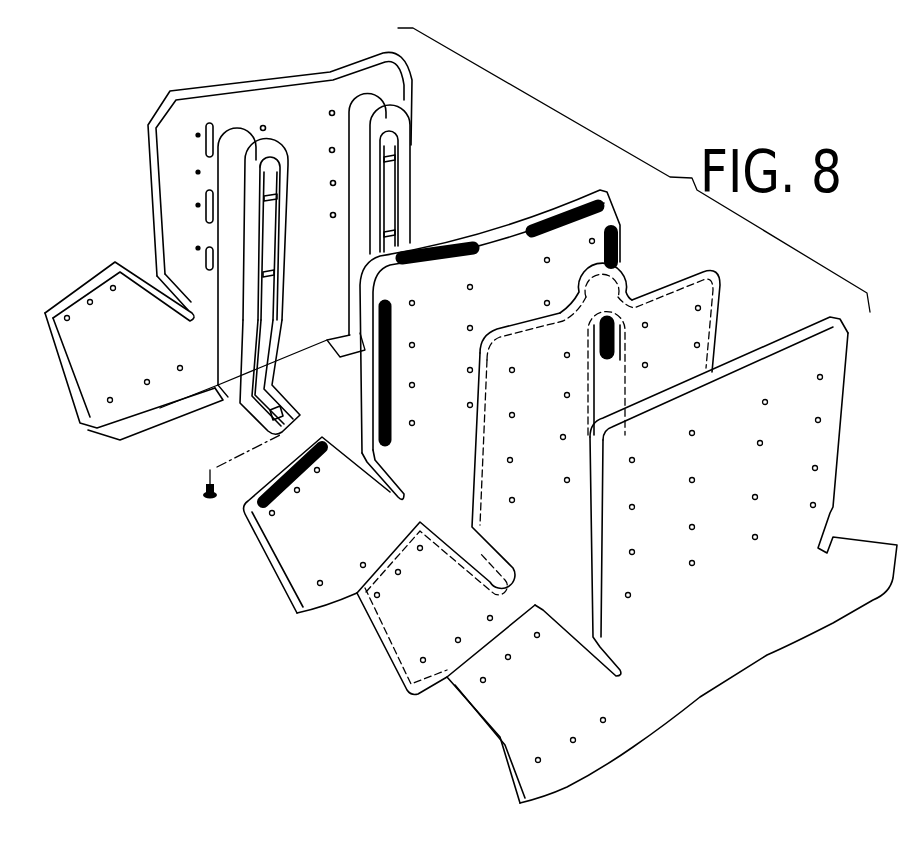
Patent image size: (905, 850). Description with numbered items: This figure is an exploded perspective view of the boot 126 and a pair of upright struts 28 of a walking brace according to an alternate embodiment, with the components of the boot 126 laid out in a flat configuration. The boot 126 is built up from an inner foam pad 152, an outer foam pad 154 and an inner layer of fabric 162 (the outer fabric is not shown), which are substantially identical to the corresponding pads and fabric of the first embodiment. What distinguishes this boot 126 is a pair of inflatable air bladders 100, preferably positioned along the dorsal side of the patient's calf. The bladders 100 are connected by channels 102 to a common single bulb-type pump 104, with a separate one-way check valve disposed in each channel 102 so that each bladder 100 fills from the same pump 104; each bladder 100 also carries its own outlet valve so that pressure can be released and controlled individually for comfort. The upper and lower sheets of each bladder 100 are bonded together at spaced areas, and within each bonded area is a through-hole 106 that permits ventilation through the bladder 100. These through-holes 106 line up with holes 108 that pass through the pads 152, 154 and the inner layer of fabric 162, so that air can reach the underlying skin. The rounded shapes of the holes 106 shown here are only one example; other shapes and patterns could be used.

The upright struts 28 is at (405, 123).
The inflatable air bladders 100 is at (638, 368).
The channels 102 is at (618, 292).
The bulb-type pump 104 is at (611, 280).
The through-hole 106 is at (565, 397).
The holes 108 is at (690, 435).
The boot 126 is at (289, 659).
The inner foam pad 152 is at (290, 548).
The outer foam pad 154 is at (93, 378).
The inner layer of fabric 162 is at (662, 560).